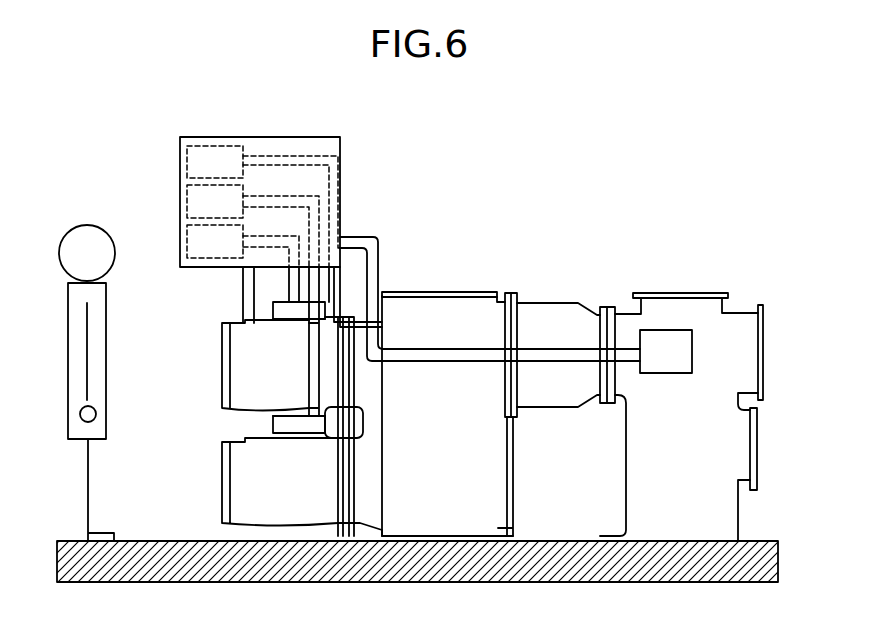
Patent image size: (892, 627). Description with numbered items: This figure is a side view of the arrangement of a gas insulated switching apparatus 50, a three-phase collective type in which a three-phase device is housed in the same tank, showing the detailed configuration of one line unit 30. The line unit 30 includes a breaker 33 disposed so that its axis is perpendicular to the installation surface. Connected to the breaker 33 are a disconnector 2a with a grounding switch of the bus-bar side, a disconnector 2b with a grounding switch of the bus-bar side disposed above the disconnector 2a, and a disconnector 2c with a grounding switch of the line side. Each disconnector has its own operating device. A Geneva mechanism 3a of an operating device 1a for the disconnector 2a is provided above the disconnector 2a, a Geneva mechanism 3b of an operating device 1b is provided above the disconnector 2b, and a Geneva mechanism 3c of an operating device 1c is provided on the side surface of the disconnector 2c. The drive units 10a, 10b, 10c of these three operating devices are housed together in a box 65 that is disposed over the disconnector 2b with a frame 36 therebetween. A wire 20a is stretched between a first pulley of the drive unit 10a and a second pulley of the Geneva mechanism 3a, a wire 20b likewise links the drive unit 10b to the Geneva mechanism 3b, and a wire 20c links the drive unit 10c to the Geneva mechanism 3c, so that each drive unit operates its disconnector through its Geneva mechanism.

The gas insulated switching apparatus 50 is at (577, 145).
The box 65 is at (343, 140).
The drive unit 10a is at (182, 243).
The drive unit 10b is at (182, 205).
The drive unit 10c is at (182, 161).
The frame 36 is at (252, 290).
The wire 20a is at (308, 376).
The wire 20b is at (289, 272).
The wire 20c is at (422, 349).
The operating device 1a is at (273, 430).
The operating device 1b is at (273, 310).
The operating device 1c is at (657, 330).
The disconnector 2a is at (245, 485).
The disconnector 2b is at (245, 363).
The disconnector 2c is at (737, 328).
The Geneva mechanism 3a is at (273, 418).
The Geneva mechanism 3b is at (273, 318).
The Geneva mechanism 3c is at (670, 340).
The line unit 30 is at (473, 310).
The breaker 33 is at (498, 500).